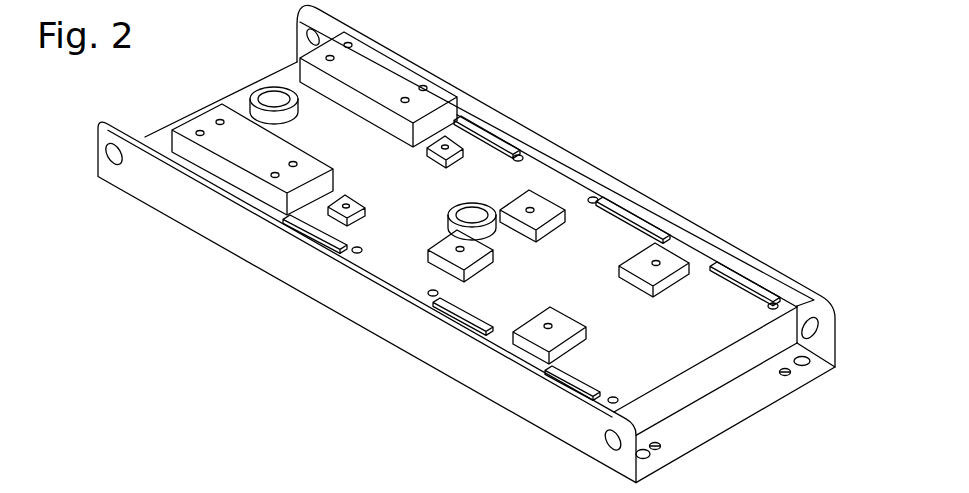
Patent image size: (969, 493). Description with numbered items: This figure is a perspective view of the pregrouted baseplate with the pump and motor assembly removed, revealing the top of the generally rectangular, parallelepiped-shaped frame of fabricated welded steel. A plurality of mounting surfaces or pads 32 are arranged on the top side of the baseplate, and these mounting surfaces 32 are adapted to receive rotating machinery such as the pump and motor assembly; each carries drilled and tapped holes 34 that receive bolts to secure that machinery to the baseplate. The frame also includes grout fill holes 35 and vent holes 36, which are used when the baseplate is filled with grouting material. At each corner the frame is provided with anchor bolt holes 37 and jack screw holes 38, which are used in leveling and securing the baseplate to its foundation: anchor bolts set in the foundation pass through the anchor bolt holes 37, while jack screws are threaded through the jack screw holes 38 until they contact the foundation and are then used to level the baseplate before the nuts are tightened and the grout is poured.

The mounting surfaces or pads 32 is at (390, 66).
The drilled and tapped holes 34 is at (200, 128).
The grout fill holes 35 is at (257, 84).
The vent holes 36 is at (519, 153).
The anchor bolt holes 37 is at (805, 367).
The jack screw holes 38 is at (787, 376).